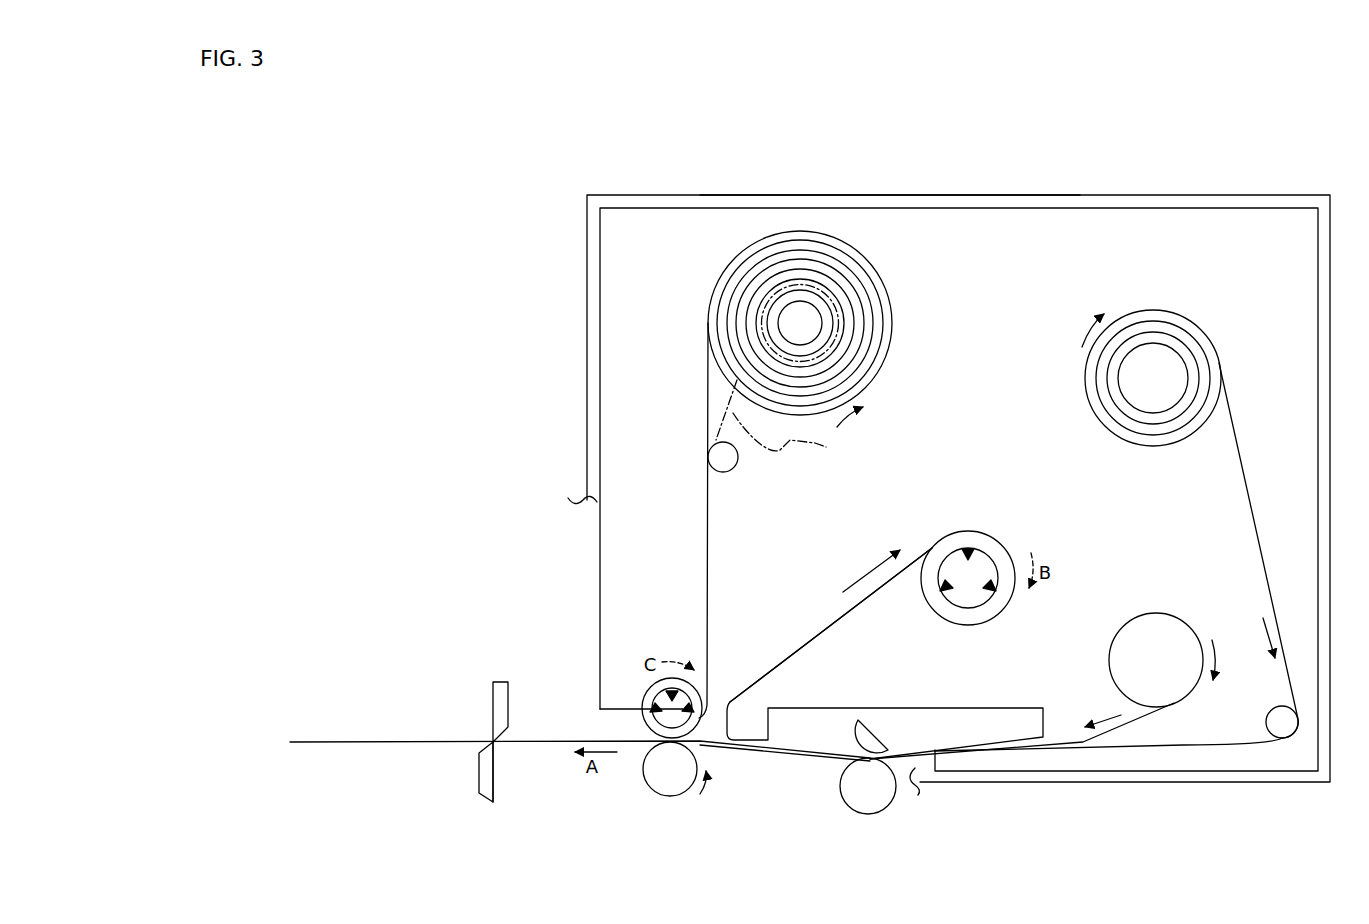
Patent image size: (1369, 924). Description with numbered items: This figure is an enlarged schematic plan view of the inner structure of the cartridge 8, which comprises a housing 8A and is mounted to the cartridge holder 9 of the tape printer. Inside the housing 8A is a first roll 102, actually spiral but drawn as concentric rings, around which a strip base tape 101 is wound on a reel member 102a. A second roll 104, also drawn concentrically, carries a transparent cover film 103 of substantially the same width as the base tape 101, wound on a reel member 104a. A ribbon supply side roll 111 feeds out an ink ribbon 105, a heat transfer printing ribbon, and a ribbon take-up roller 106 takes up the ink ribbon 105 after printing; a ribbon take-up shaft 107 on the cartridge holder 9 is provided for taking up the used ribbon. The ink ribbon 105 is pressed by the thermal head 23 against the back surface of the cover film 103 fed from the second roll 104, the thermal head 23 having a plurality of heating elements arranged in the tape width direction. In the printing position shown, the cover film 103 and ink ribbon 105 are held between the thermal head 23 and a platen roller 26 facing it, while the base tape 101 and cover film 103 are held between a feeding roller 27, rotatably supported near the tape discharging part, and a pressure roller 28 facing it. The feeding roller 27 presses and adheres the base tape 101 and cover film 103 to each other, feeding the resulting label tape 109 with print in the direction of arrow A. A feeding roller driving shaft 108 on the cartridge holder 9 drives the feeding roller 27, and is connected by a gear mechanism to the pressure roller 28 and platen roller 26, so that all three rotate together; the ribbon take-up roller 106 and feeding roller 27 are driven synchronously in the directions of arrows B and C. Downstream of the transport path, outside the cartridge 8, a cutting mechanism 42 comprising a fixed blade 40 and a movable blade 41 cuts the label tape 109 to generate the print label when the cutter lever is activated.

The cartridge 8 is at (1264, 202).
The housing 8A is at (1067, 208).
The cartridge holder 9 is at (872, 200).
The thermal head 23 is at (882, 730).
The platen roller 26 is at (883, 808).
The feeding roller 27 is at (653, 727).
The pressure roller 28 is at (681, 796).
The fixed blade 40 is at (499, 688).
The movable blade 41 is at (487, 790).
The cutting mechanism 42 is at (495, 823).
The base tape 101 is at (707, 370).
The first roll 102 is at (898, 291).
The reel member 102a is at (818, 313).
The cover film 103 is at (1243, 448).
The second roll 104 is at (1224, 361).
The reel member 104a is at (1160, 377).
The ink ribbon 105 is at (862, 601).
The ribbon take-up roller 106 is at (965, 626).
The ribbon take-up shaft 107 is at (993, 580).
The feeding roller driving shaft 108 is at (650, 714).
The label tape with print 109 is at (557, 747).
The ribbon supply side roll 111 is at (1168, 648).